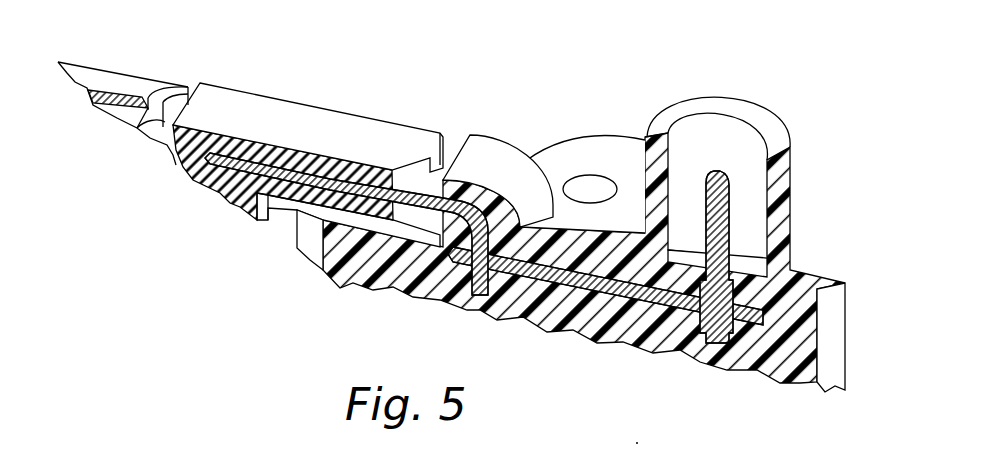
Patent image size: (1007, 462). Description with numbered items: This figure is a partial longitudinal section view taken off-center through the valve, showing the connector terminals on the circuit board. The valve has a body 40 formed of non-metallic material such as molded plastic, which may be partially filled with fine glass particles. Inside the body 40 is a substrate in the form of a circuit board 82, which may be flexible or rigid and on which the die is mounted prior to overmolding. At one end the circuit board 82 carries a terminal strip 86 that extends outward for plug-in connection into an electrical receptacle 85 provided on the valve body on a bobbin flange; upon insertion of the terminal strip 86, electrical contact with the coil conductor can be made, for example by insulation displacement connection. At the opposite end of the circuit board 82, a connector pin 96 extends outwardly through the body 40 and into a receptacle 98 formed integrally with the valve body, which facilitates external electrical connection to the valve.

The body 40 is at (847, 320).
The circuit board 82 is at (595, 277).
The electrical receptacle 85 is at (363, 118).
The terminal strip 86 is at (440, 135).
The connector pin 96 is at (773, 253).
The receptacle 98 is at (790, 128).